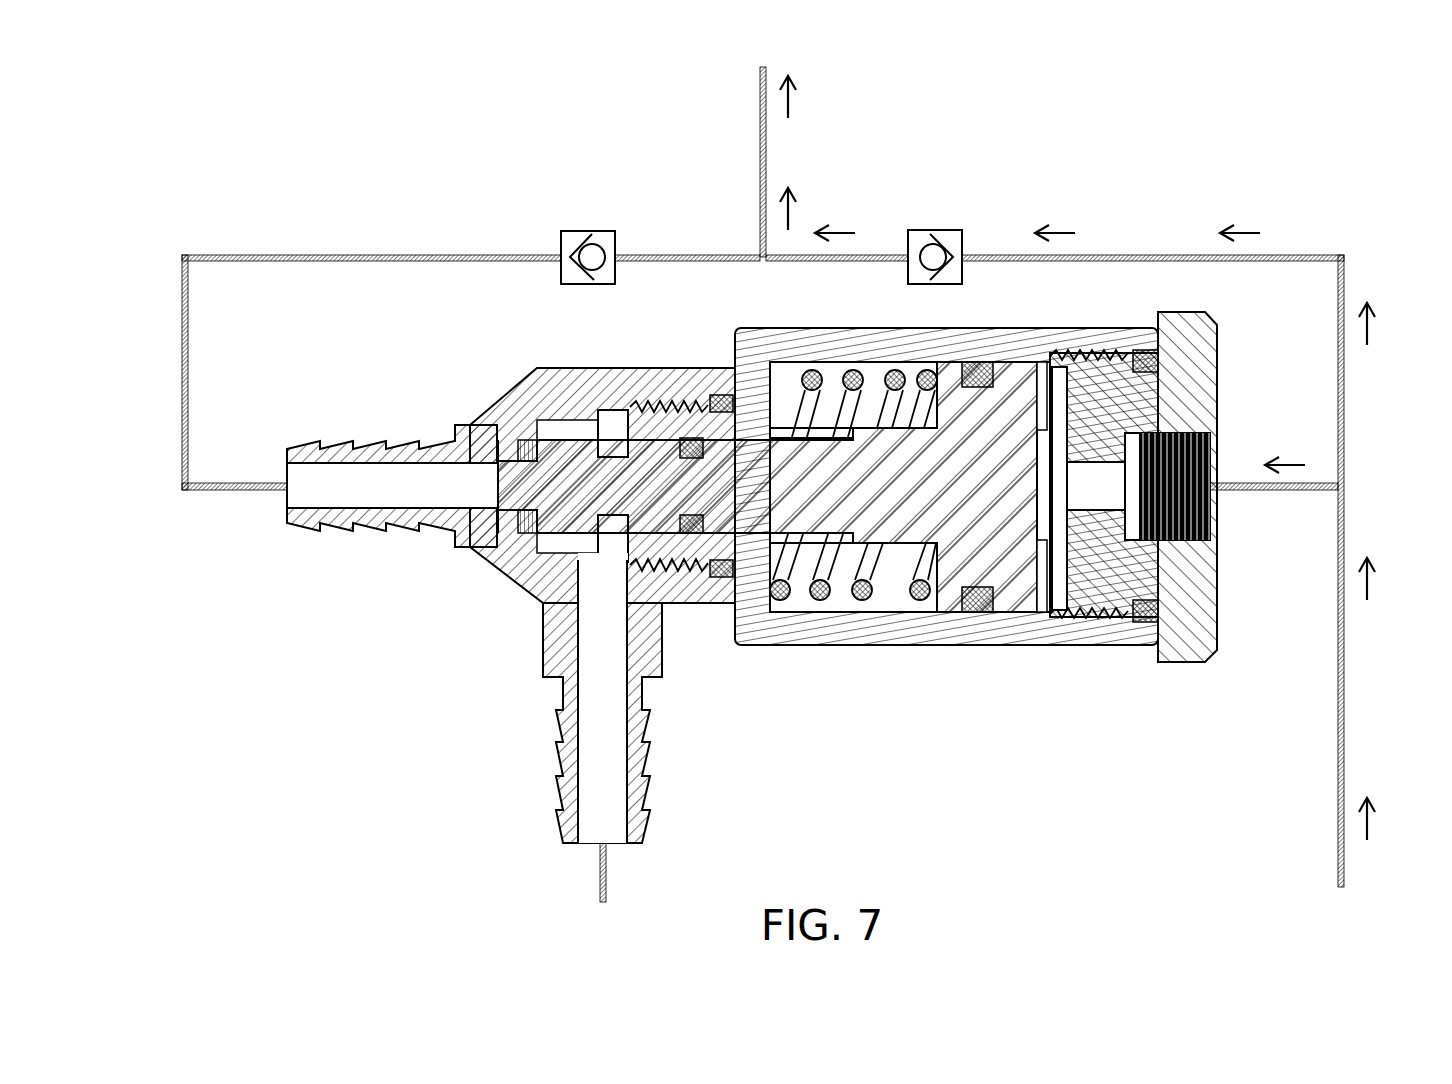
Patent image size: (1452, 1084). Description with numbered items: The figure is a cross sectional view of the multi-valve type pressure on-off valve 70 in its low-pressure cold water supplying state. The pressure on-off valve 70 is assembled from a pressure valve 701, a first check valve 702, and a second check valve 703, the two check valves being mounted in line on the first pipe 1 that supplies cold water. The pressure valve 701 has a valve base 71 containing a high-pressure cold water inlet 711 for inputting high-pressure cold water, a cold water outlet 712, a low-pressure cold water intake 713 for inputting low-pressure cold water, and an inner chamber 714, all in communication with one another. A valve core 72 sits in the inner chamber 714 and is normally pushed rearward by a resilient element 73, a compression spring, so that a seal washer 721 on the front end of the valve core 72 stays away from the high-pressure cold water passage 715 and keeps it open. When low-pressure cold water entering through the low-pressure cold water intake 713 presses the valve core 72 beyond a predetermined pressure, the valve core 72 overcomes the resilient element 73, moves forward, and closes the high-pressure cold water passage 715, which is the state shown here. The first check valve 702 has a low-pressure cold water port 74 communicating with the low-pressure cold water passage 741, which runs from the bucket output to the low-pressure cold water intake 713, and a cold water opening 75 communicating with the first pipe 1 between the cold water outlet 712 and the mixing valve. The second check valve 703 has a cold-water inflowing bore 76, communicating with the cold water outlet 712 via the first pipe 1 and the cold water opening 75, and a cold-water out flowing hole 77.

The first pipe 1 is at (760, 200).
The pressure on-off valve 70 is at (762, 606).
The pressure valve 701 is at (972, 650).
The first check valve 702 is at (930, 230).
The second check valve 703 is at (575, 230).
The valve base 71 is at (500, 405).
The high-pressure cold water inlet 711 is at (613, 832).
The cold water outlet 712 is at (313, 474).
The low-pressure cold water intake 713 is at (1210, 455).
The inner chamber 714 is at (893, 583).
The high-pressure cold water passage 715 is at (505, 517).
The valve core 72 is at (810, 525).
The seal washer 721 is at (527, 522).
The resilient element 73 is at (859, 592).
The low-pressure cold water port 74 is at (962, 256).
The cold water opening 75 is at (908, 256).
The cold-water inflowing bore 76 is at (562, 256).
The cold-water out flowing hole 77 is at (615, 256).
The low-pressure cold water passage 741 is at (1341, 706).